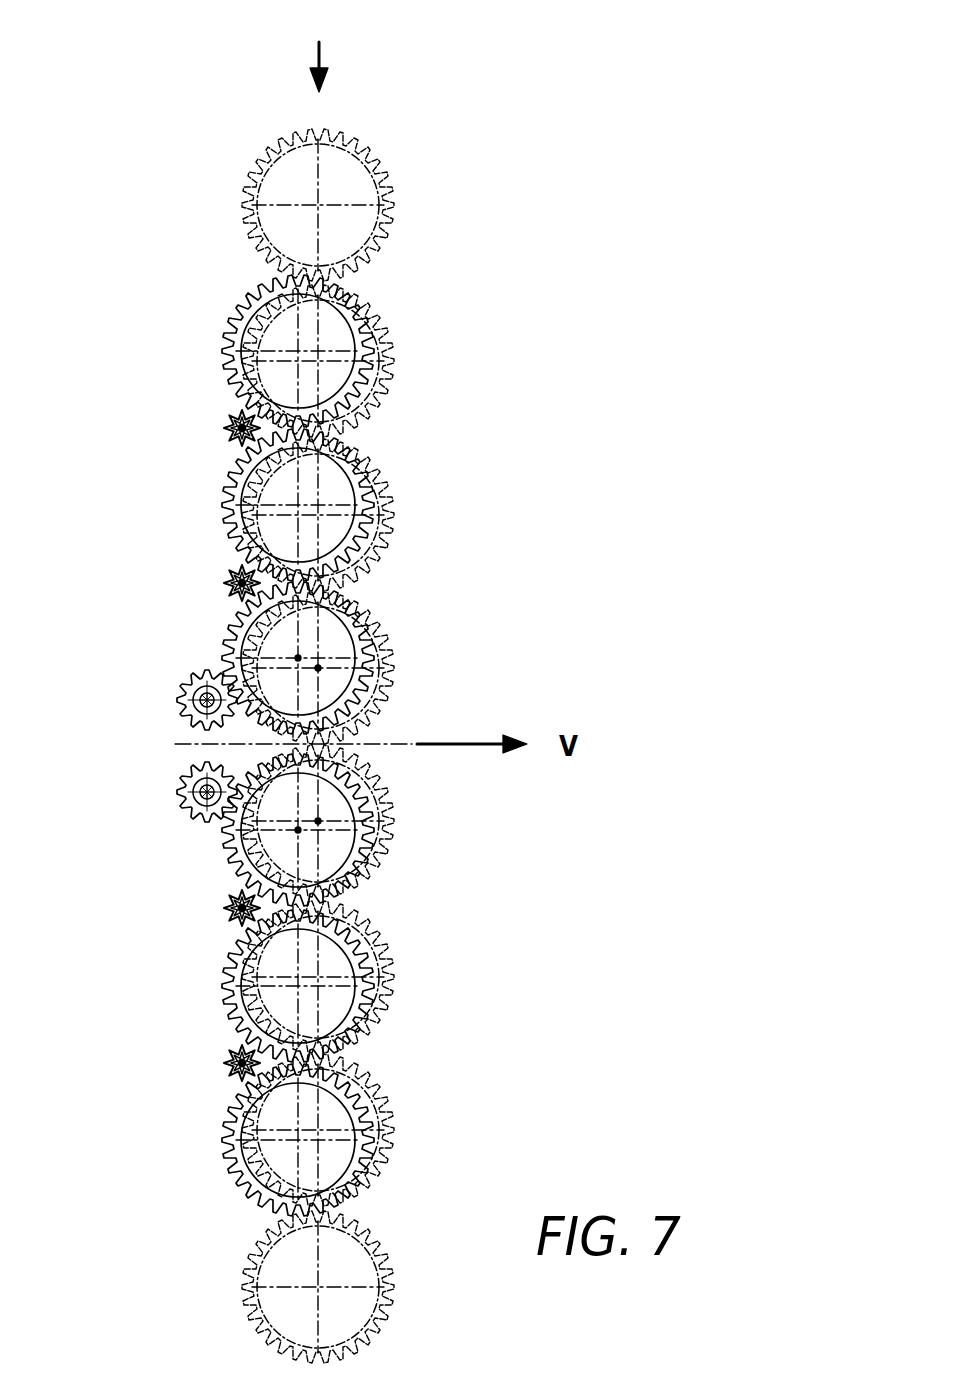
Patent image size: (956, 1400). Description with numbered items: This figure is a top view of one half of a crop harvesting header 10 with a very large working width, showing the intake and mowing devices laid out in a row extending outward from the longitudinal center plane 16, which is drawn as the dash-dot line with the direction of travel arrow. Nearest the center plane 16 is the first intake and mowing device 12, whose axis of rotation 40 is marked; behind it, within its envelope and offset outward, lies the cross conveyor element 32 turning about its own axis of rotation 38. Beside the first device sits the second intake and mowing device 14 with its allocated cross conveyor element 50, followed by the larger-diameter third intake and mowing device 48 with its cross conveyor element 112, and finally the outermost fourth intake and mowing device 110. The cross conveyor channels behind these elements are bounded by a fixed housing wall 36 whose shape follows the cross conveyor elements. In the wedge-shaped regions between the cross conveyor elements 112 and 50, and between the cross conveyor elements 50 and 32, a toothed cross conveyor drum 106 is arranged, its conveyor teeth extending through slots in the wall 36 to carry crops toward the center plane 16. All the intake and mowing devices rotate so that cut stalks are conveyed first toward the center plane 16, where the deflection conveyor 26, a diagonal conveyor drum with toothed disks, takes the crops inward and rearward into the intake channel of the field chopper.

The crop harvesting header 10 is at (315, 46).
The fourth intake and mowing device 110 is at (395, 205).
The cross conveyor element 112 is at (246, 328).
The fixed housing wall 36 is at (225, 362).
The third intake and mowing device 48 is at (390, 382).
The cross conveyor element 50 is at (222, 502).
The second intake and mowing device 14 is at (390, 521).
The cross conveyor drum 106 is at (226, 428).
The cross conveyor element 32 is at (232, 660).
The first intake and mowing device 12 is at (390, 700).
The axis of rotation of the cross conveyor element 38 is at (298, 658).
The axis of rotation of the first intake and mowing device 40 is at (318, 668).
The deflection conveyor 26 is at (178, 792).
The longitudinal center plane 16 is at (385, 748).